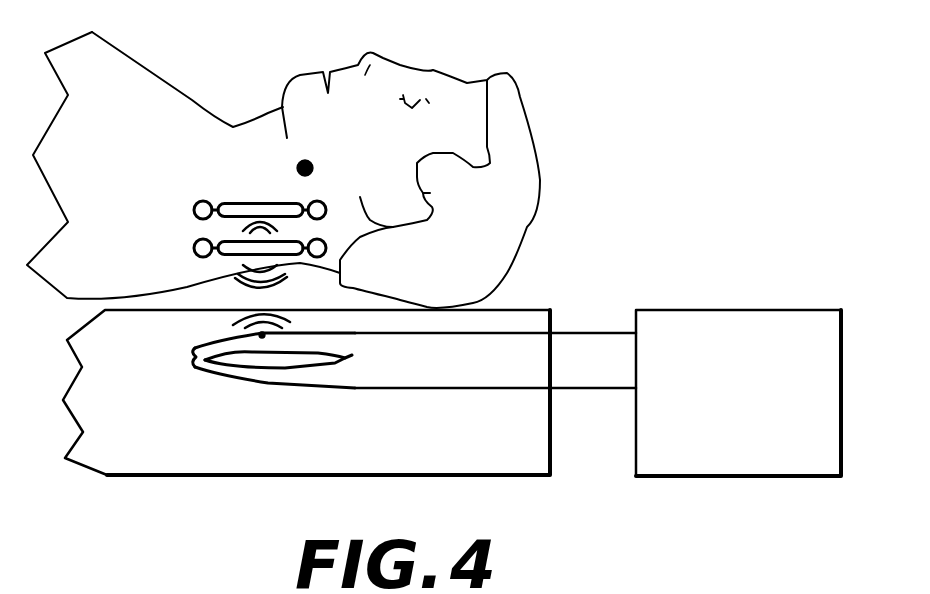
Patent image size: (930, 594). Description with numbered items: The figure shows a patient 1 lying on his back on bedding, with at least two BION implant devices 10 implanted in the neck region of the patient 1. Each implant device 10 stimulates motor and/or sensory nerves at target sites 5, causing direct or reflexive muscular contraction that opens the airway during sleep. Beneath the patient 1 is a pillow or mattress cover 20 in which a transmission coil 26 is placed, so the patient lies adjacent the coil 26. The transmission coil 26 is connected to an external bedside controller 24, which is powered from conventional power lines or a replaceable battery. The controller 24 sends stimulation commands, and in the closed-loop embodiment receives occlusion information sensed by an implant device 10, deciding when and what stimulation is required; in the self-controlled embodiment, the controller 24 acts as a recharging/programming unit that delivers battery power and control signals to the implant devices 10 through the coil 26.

The patient 1 is at (98, 171).
The target site 5 is at (310, 163).
The BION implant device 10 is at (237, 207).
The pillow or mattress cover 20 is at (175, 452).
The external bedside controller 24 is at (778, 401).
The transmission coil 26 is at (345, 358).